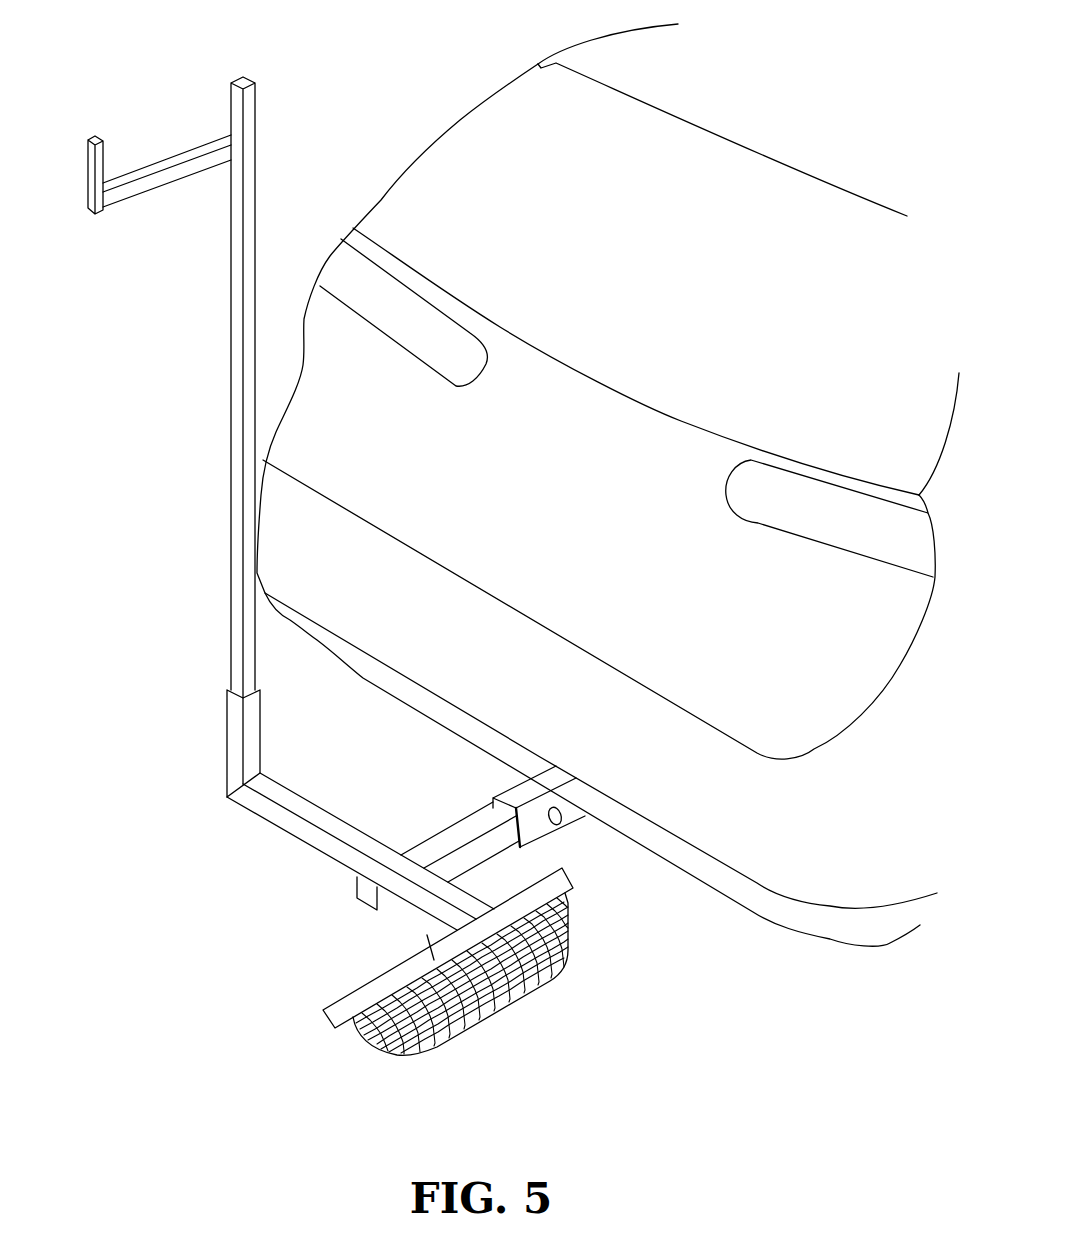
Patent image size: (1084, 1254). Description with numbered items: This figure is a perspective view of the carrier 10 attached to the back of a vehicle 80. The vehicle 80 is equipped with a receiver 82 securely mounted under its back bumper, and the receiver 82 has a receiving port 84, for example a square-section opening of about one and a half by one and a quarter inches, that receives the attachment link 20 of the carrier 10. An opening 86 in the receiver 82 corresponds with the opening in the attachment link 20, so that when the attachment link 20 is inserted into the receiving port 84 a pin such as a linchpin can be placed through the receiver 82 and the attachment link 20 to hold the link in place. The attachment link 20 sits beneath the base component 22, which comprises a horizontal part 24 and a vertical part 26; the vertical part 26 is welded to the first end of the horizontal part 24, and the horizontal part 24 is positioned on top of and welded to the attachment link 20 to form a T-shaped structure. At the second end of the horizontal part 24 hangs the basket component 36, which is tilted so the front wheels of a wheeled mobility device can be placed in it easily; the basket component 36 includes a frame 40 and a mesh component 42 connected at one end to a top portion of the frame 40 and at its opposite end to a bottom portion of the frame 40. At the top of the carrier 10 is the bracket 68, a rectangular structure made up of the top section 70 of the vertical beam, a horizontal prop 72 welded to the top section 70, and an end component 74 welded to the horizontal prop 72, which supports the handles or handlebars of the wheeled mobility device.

The carrier 10 is at (155, 383).
The attachment link 20 is at (418, 855).
The base component 22 is at (210, 780).
The horizontal part 24 is at (277, 818).
The vertical part 26 is at (238, 722).
The basket component 36 is at (350, 1065).
The frame 40 is at (388, 978).
The mesh component 42 is at (465, 1045).
The bracket 68 is at (173, 197).
The top section of the vertical beam 70 is at (252, 106).
The horizontal prop 72 is at (188, 153).
The end component 74 is at (88, 168).
The vehicle 80 is at (512, 147).
The receiver 82 is at (505, 783).
The receiving port 84 is at (492, 808).
The opening 86 is at (562, 820).